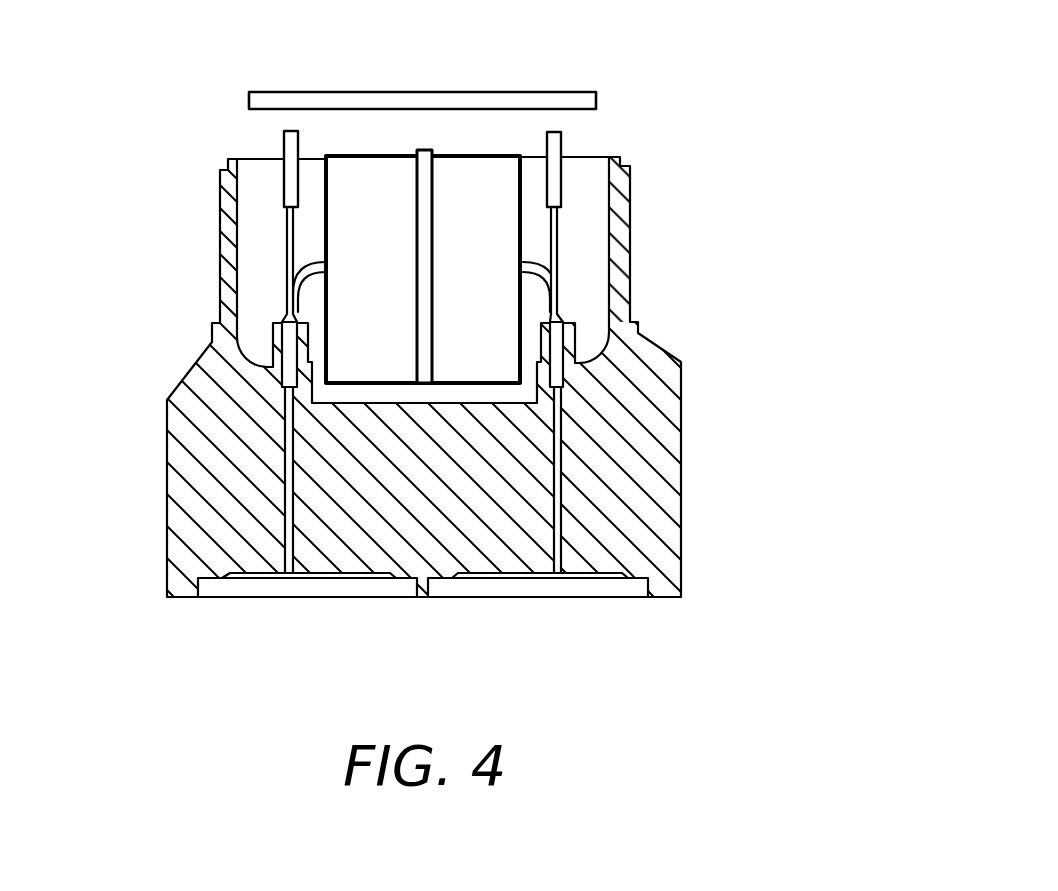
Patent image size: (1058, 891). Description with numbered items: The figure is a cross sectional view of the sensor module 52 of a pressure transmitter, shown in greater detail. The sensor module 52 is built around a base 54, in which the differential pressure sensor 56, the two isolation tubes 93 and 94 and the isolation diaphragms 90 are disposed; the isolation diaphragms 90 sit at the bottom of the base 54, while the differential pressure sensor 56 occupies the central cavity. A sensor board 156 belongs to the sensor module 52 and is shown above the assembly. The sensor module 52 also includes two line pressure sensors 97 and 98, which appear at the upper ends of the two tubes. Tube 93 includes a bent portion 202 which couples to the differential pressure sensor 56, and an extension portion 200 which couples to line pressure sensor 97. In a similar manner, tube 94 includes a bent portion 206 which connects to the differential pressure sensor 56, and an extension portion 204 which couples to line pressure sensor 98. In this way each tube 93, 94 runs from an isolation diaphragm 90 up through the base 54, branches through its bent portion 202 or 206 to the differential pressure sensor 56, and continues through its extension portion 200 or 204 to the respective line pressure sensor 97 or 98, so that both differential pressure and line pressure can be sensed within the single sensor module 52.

The sensor module 52 is at (828, 206).
The base 54 is at (640, 448).
The differential pressure sensor 56 is at (487, 287).
The isolation diaphragms 90 is at (228, 574).
The tube 93 is at (288, 442).
The tube 94 is at (562, 450).
The line pressure sensor 97 is at (284, 179).
The line pressure sensor 98 is at (563, 166).
The sensor board 156 is at (596, 101).
The extension portion 200 is at (284, 224).
The bent portion 202 is at (284, 276).
The extension portion 204 is at (562, 224).
The bent portion 206 is at (562, 279).